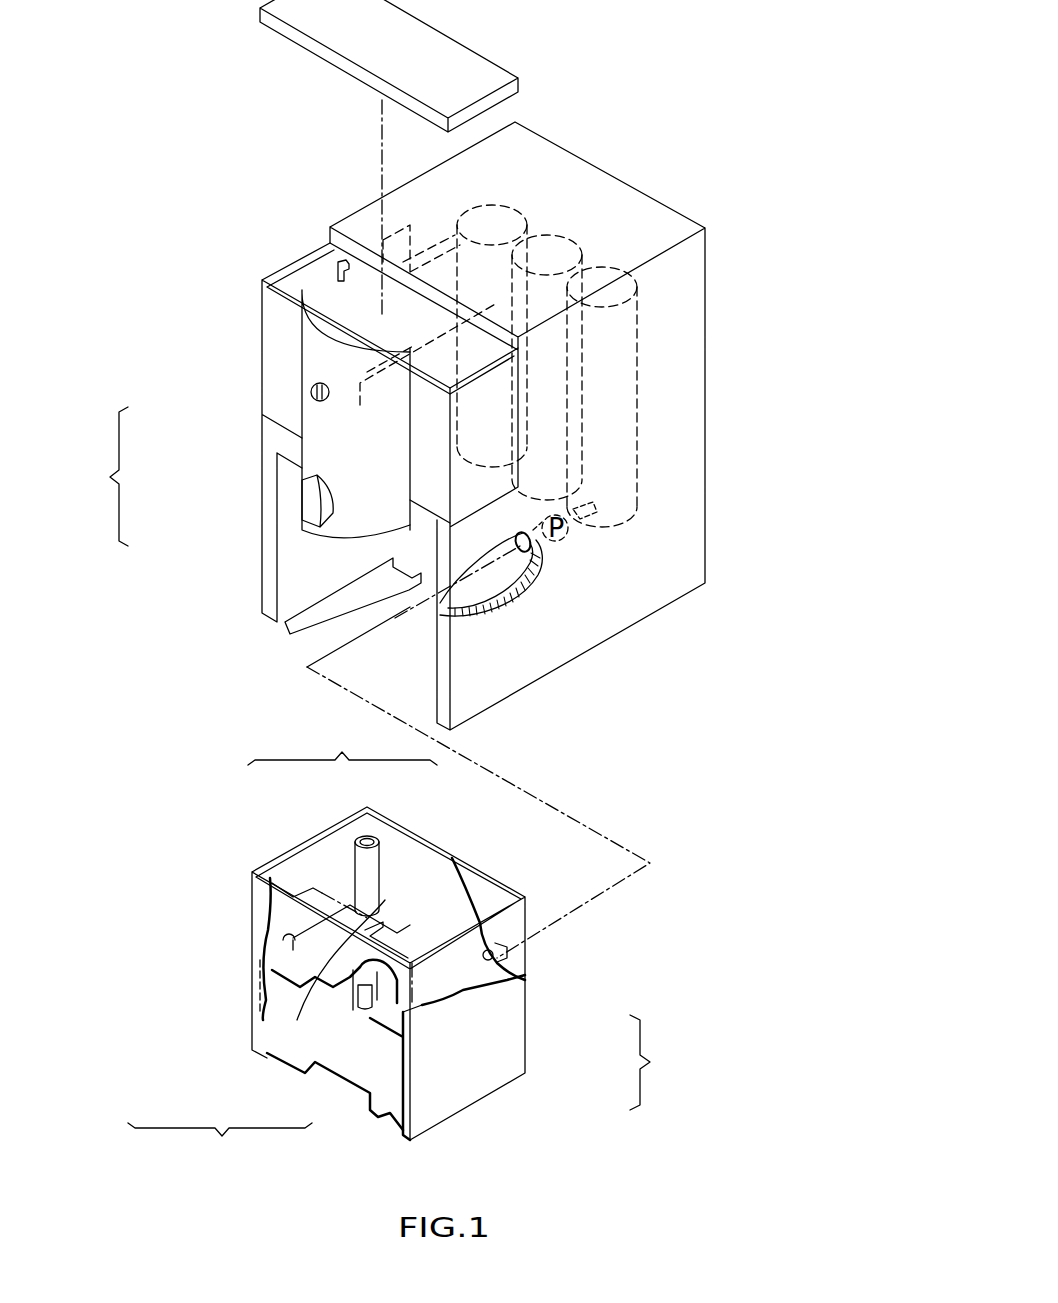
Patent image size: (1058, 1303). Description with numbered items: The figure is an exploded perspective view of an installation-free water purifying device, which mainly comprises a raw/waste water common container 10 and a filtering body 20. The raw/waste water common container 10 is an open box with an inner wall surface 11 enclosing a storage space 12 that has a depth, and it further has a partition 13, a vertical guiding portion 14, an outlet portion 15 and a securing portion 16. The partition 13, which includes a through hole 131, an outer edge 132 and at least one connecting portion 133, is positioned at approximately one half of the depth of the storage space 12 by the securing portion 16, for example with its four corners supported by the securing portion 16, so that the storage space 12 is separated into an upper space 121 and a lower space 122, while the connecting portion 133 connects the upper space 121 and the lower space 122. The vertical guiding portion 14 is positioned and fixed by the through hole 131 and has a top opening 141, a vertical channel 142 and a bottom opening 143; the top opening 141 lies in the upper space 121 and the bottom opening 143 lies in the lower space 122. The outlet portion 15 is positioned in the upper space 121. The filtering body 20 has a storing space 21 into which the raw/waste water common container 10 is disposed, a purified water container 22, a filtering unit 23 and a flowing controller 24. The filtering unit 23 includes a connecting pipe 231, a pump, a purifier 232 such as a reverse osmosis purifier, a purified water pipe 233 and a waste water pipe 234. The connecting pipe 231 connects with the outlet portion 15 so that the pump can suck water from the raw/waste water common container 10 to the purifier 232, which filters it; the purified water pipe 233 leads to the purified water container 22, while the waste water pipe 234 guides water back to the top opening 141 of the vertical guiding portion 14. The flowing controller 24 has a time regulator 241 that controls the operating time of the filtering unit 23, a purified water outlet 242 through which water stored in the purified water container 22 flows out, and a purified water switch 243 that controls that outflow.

The raw/waste water common container 10 is at (251, 868).
The inner wall surface 11 is at (429, 866).
The storage space 12 is at (660, 1062).
The upper space 121 is at (403, 1012).
The lower space 122 is at (377, 1063).
The partition 13 is at (220, 1146).
The through hole 131 is at (345, 967).
The outer edge 132 is at (293, 945).
The connecting portion 133 is at (283, 933).
The vertical guiding portion 14 is at (342, 738).
The top opening 141 is at (353, 845).
The vertical channel 142 is at (366, 838).
The bottom opening 143 is at (370, 985).
The outlet portion 15 is at (487, 950).
The securing portion 16 is at (378, 1065).
The filtering body 20 is at (706, 311).
The storing space 21 is at (378, 600).
The purified water container 22 is at (262, 278).
The filtering unit 23 is at (639, 416).
The connecting pipe 231 is at (521, 553).
The purifier 232 is at (520, 210).
The purified water pipe 233 is at (383, 245).
The waste water pipe 234 is at (360, 372).
The flowing controller 24 is at (99, 476).
The time regulator 241 is at (312, 393).
The purified water outlet 242 is at (345, 525).
The purified water switch 243 is at (313, 507).